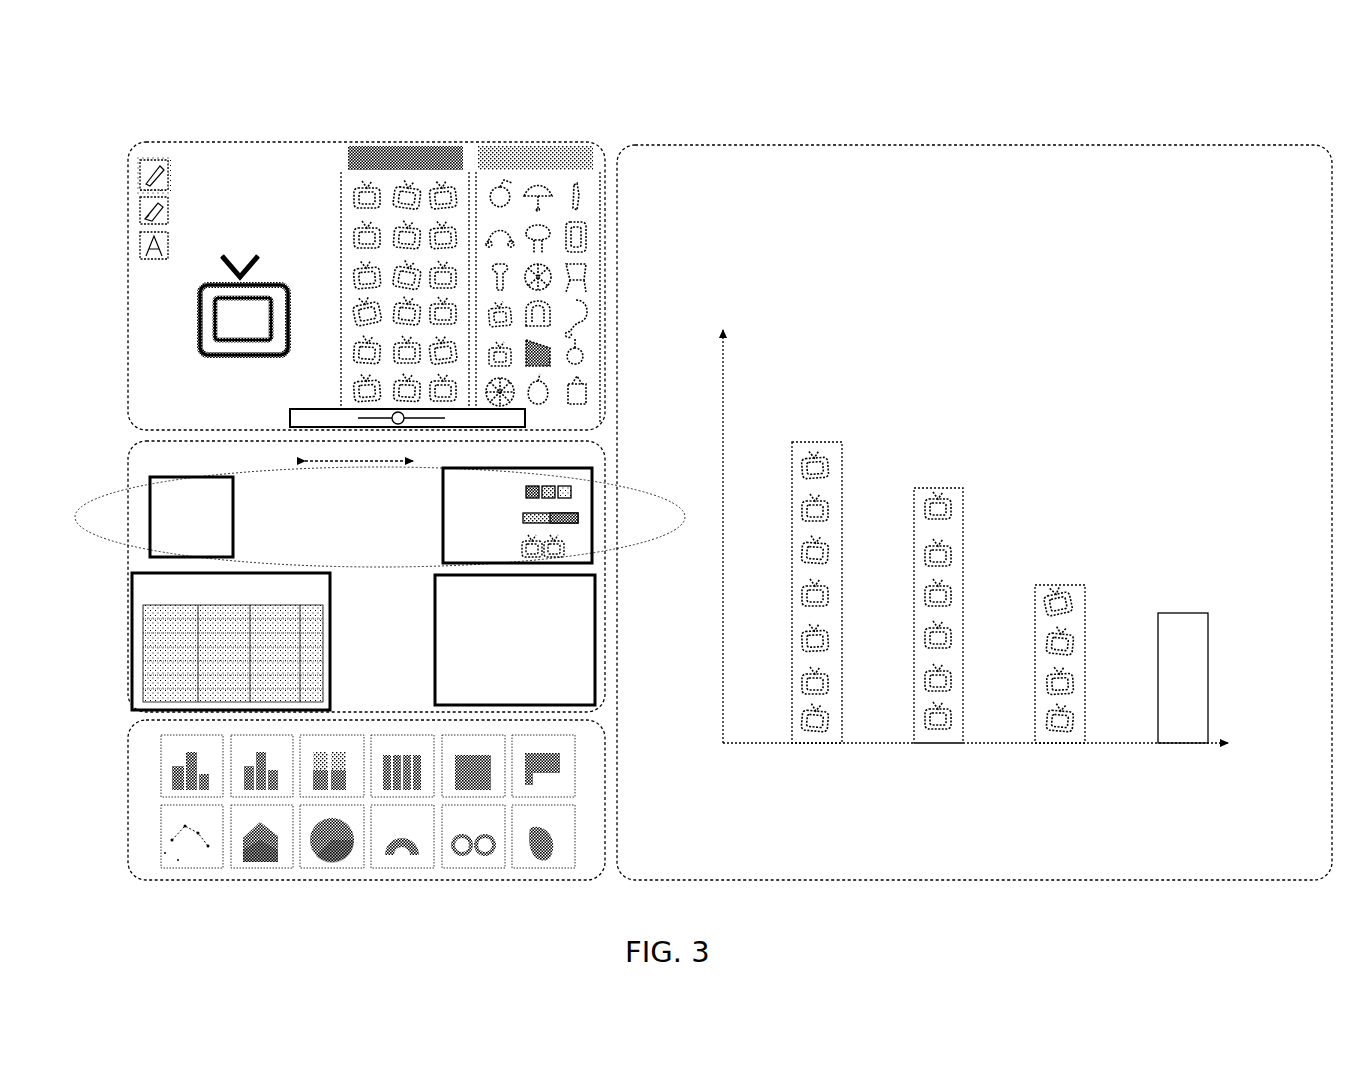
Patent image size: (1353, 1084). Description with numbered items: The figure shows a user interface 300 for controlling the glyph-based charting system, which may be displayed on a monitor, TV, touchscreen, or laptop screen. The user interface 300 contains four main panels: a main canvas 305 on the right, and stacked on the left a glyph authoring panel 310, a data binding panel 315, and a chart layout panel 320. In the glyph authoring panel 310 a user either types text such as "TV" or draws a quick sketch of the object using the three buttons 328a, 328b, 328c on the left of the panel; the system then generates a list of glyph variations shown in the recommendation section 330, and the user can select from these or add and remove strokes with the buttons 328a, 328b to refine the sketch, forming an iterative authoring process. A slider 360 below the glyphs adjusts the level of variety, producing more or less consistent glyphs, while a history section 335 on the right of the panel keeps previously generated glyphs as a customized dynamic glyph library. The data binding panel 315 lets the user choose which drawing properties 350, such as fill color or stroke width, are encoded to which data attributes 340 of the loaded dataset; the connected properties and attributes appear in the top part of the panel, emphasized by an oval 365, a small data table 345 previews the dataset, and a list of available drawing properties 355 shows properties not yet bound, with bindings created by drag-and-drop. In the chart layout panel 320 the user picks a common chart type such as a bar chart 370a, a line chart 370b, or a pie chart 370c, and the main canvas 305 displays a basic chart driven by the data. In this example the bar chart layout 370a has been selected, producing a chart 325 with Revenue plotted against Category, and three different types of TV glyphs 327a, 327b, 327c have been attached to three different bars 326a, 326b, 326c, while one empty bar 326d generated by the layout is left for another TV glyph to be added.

The user interface 300 is at (1147, 113).
The main canvas 305 is at (974, 512).
The glyph authoring panel 310 is at (351, 252).
The data binding panel 315 is at (376, 576).
The chart layout panel 320 is at (340, 831).
The chart 325 is at (752, 745).
The first bar 326a is at (847, 565).
The second bar 326b is at (967, 588).
The third bar 326c is at (1089, 637).
The empty bar 326d is at (1205, 613).
The first TV glyph 327a is at (828, 508).
The second TV glyph 327b is at (944, 553).
The third TV glyph 327c is at (1068, 640).
The first button 328a is at (150, 162).
The second button 328b is at (140, 210).
The third button 328c is at (140, 248).
The recommendation section 330 is at (460, 153).
The history section 335 is at (590, 153).
The data attributes 340 is at (233, 504).
The data table 345 is at (132, 600).
The drawing properties 350 is at (443, 502).
The available drawing properties 355 is at (435, 638).
The slider 360 is at (290, 420).
The oval 365 is at (603, 485).
The bar chart 370a is at (175, 783).
The line chart 370b is at (190, 836).
The pie chart 370c is at (340, 858).